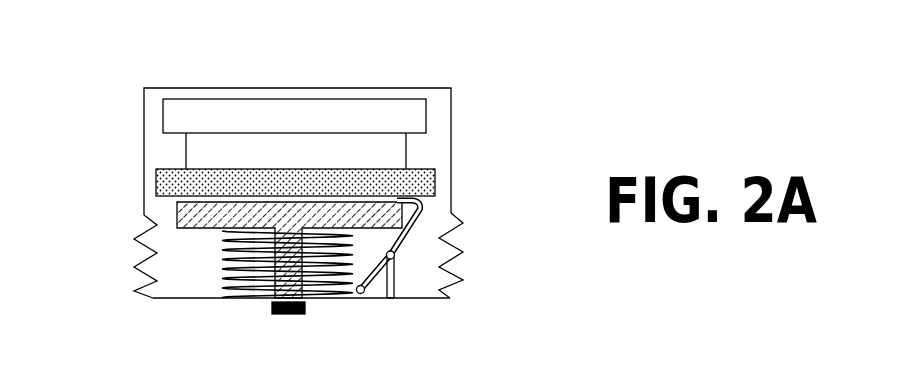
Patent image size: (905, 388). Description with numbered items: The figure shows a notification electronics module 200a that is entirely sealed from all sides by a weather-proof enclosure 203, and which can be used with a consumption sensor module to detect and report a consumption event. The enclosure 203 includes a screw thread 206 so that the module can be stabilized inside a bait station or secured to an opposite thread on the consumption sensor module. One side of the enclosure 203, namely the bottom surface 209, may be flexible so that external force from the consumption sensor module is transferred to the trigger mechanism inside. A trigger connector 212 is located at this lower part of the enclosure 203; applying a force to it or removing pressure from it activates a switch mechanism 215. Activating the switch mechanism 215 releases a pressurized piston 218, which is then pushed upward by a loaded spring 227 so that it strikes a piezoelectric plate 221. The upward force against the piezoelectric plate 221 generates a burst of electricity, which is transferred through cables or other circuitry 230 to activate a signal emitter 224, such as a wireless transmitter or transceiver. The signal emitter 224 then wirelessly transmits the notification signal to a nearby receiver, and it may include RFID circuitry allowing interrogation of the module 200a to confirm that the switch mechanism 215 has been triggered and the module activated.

The notification electronics module 200a is at (243, 69).
The weather-proof enclosure 203 is at (185, 88).
The screw thread 206 is at (135, 289).
The bottom surface 209 is at (373, 305).
The trigger connector 212 is at (288, 315).
The switch mechanism 215 is at (425, 211).
The pressurized piston 218 is at (177, 215).
The piezoelectric plate 221 is at (435, 182).
The signal emitter 224 is at (394, 99).
The loaded spring 227 is at (225, 274).
The circuitry 230 is at (195, 152).